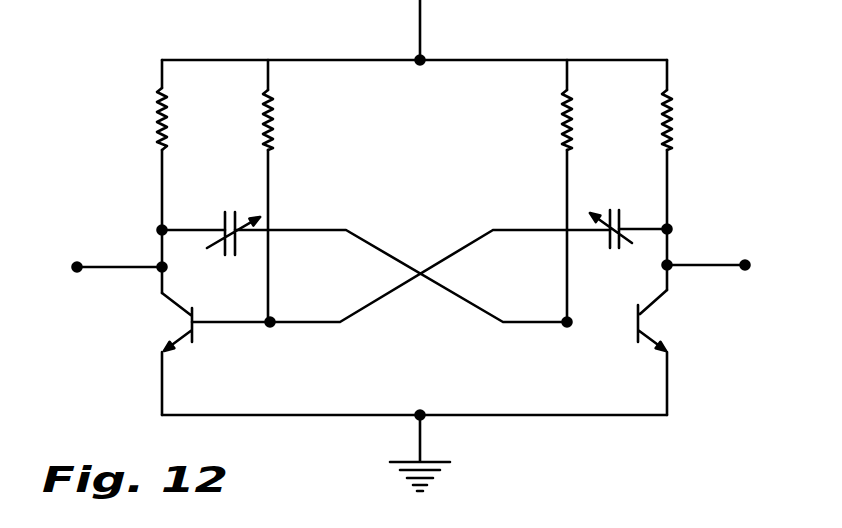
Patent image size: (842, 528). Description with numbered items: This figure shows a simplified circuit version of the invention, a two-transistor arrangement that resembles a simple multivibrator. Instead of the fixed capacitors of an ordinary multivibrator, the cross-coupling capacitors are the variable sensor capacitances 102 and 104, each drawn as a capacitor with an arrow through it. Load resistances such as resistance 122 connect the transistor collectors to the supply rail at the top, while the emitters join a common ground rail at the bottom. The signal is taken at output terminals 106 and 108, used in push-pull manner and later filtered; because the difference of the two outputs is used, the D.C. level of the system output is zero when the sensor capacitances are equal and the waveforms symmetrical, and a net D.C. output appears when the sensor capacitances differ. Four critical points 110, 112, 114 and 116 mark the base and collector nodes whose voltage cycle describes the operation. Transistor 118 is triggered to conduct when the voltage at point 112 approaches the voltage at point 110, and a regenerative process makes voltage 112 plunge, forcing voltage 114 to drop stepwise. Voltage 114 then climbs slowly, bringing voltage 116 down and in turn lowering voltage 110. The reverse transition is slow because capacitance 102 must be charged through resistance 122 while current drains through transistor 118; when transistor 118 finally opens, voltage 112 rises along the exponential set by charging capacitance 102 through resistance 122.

The variable sensor capacitance 102 is at (230, 213).
The variable sensor capacitance 104 is at (612, 208).
The output terminal 106 is at (72, 265).
The output terminal 108 is at (775, 250).
The critical point 110 is at (275, 327).
The critical point 112 is at (160, 229).
The critical point 114 is at (560, 327).
The critical point 116 is at (670, 228).
The transistor 118 is at (185, 338).
The resistance 122 is at (167, 107).